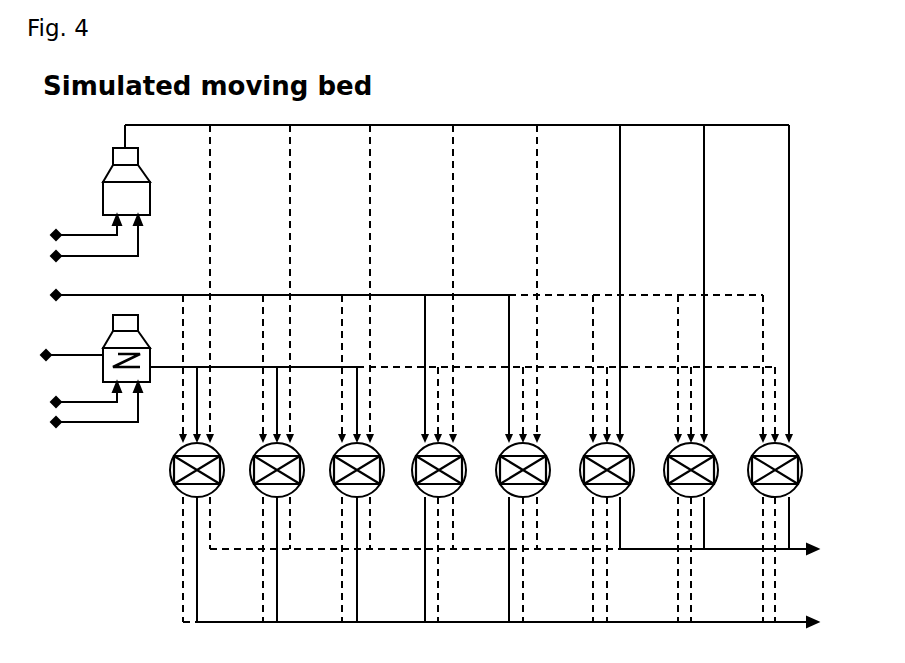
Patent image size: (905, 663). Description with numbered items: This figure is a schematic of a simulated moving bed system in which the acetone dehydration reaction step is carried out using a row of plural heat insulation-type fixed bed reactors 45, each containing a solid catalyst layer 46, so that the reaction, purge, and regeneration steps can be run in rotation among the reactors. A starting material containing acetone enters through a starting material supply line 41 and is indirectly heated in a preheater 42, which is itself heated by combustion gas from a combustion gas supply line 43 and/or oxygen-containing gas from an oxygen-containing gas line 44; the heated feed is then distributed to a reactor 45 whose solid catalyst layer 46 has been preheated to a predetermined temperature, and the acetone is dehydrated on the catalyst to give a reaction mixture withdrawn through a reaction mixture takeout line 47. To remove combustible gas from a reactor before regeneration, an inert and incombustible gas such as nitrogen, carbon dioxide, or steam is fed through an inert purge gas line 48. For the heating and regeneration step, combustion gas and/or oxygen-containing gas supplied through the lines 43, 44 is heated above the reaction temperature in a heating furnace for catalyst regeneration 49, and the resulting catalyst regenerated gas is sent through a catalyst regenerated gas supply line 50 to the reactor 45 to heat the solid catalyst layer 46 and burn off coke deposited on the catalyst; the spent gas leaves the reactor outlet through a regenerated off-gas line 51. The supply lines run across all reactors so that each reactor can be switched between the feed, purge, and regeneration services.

The starting material supply line 41 is at (66, 341).
The preheater 42 is at (213, 370).
The combustion gas supply line 43 is at (75, 308).
The oxygen-containing gas line 44 is at (86, 337).
The heat insulation-type fixed bed reactor 45 is at (467, 456).
The solid catalyst layer 46 is at (462, 483).
The reaction mixture takeout line 47 is at (474, 562).
The inert purge gas line 48 is at (280, 345).
The heating furnace for catalyst regeneration 49 is at (101, 170).
The catalyst regenerated gas supply line 50 is at (457, 260).
The regenerated off-gas line 51 is at (732, 525).